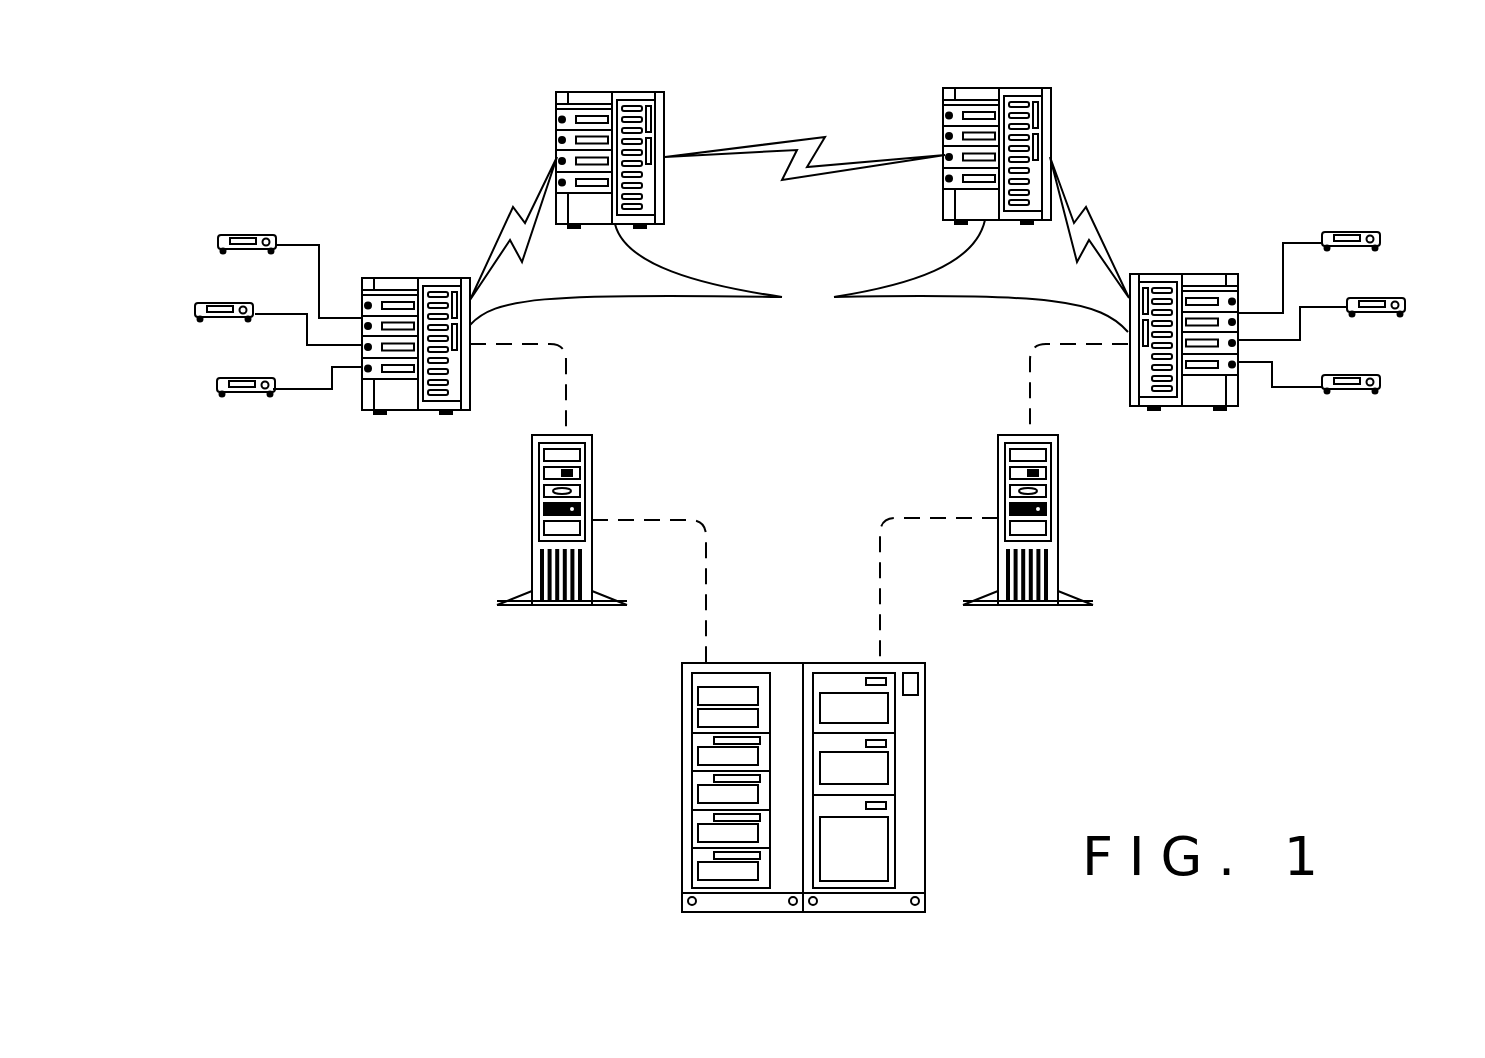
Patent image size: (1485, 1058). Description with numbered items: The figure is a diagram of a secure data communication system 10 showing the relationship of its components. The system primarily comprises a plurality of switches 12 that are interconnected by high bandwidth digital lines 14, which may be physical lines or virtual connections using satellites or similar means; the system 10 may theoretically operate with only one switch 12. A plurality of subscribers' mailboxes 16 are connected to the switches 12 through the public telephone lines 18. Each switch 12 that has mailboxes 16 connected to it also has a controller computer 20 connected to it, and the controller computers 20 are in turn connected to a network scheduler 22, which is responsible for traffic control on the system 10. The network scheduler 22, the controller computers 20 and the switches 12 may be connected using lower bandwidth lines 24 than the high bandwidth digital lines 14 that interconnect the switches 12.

The secure data communication system 10 is at (1228, 138).
The switch 12 is at (799, 276).
The high bandwidth digital line 14 is at (507, 215).
The subscriber's mailbox 16 is at (195, 306).
The public telephone line 18 is at (293, 243).
The controller computer 20 is at (530, 610).
The network scheduler 22 is at (925, 735).
The lower bandwidth line 24 is at (570, 387).